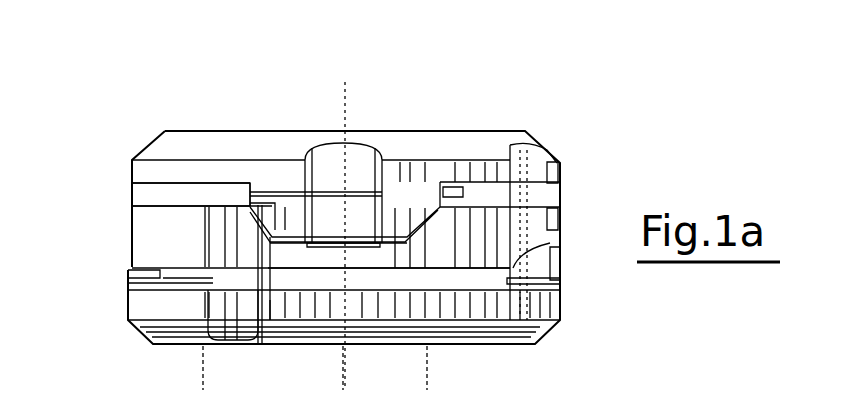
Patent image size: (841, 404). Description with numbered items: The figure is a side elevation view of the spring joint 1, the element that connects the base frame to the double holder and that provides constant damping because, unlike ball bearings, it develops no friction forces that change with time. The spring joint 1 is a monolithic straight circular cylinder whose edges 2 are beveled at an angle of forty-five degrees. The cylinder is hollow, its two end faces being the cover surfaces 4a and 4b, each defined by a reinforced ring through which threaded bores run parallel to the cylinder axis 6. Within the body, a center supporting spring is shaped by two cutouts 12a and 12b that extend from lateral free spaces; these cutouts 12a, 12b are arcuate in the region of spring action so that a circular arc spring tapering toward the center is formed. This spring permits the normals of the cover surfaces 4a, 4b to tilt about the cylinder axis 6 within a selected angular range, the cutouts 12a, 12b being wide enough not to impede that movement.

The spring joint 1 is at (108, 267).
The edges 2 is at (548, 329).
The cover surface 4a is at (440, 346).
The cover surface 4b is at (353, 375).
The cylinder axis 6 is at (345, 80).
The cutout 12a is at (290, 245).
The cutout 12b is at (250, 207).